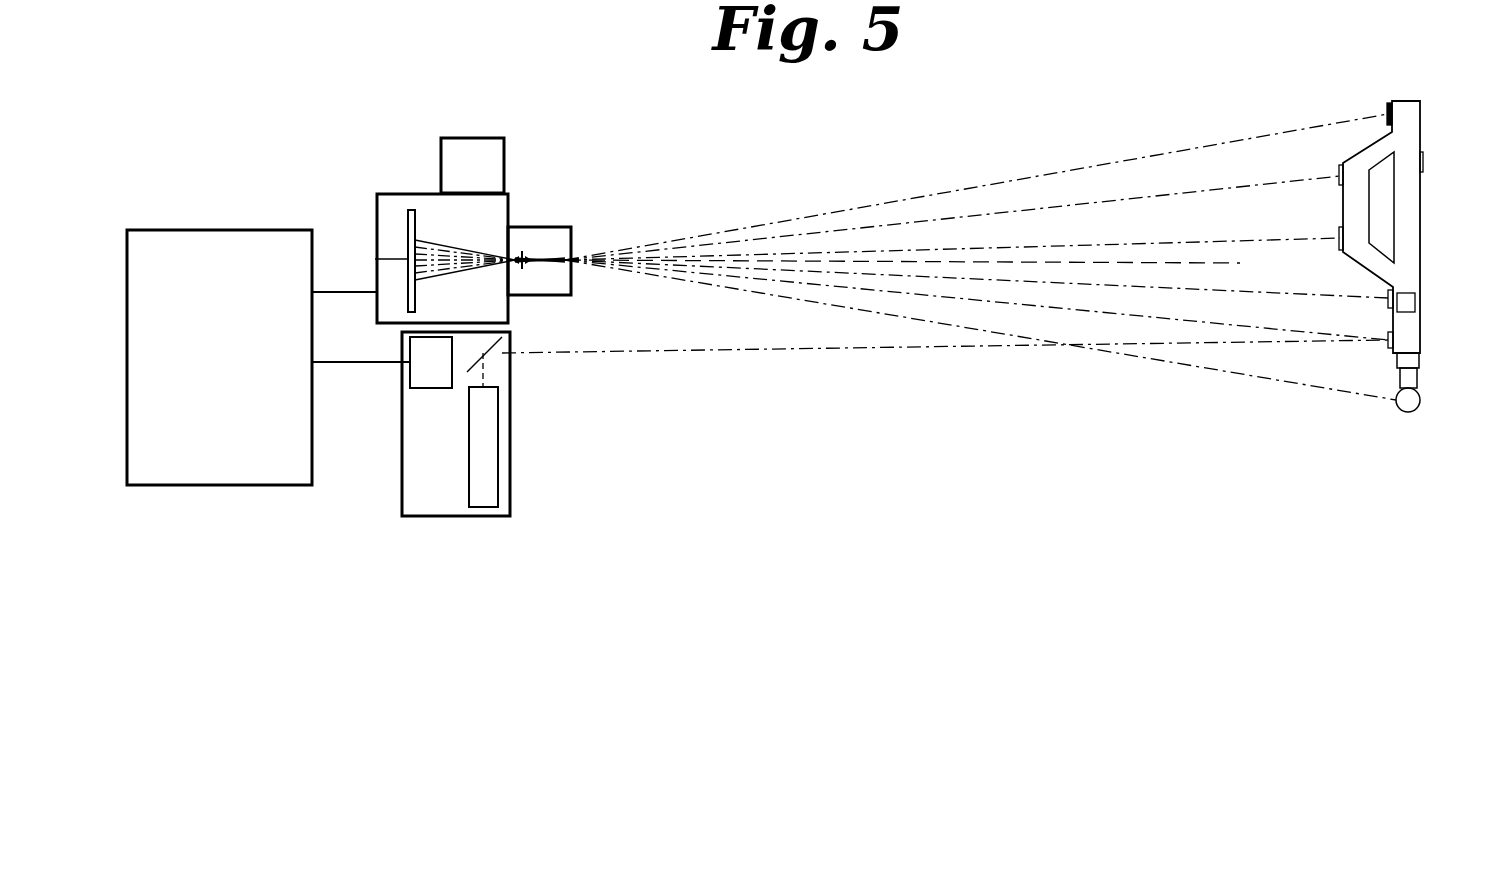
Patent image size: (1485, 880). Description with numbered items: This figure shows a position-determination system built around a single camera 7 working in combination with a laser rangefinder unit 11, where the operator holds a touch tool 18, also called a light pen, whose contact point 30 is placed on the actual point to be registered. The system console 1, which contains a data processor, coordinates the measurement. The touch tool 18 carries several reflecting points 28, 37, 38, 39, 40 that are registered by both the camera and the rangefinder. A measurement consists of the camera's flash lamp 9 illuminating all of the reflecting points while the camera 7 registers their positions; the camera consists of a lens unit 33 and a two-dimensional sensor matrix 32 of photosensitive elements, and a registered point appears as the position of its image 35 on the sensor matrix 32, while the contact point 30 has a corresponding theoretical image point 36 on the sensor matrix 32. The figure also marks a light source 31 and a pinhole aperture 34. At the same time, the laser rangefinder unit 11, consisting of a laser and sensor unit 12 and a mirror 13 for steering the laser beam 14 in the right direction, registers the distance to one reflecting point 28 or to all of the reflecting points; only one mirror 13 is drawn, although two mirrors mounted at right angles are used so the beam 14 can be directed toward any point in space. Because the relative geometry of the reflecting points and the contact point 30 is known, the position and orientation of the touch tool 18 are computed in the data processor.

The system console 1 is at (147, 273).
The camera 7 is at (408, 194).
The flash lamp 9 is at (462, 174).
The laser rangefinder unit 11 is at (413, 503).
The laser and sensor unit 12 is at (483, 447).
The mirror 13 is at (479, 359).
The laser beam 14 is at (684, 353).
The touch tool 18 is at (1435, 126).
The reflecting point 28 is at (1374, 351).
The contact point 30 is at (1405, 412).
The light source 31 is at (419, 371).
The sensor matrix 32 is at (398, 265).
The lens unit 33 is at (557, 252).
The pinhole aperture 34 is at (533, 271).
The image 35 is at (421, 281).
The theoretical image point 36 is at (421, 239).
The reflecting point 37 is at (1385, 309).
The reflecting point 38 is at (1324, 230).
The reflecting point 39 is at (1324, 167).
The reflecting point 40 is at (1374, 107).